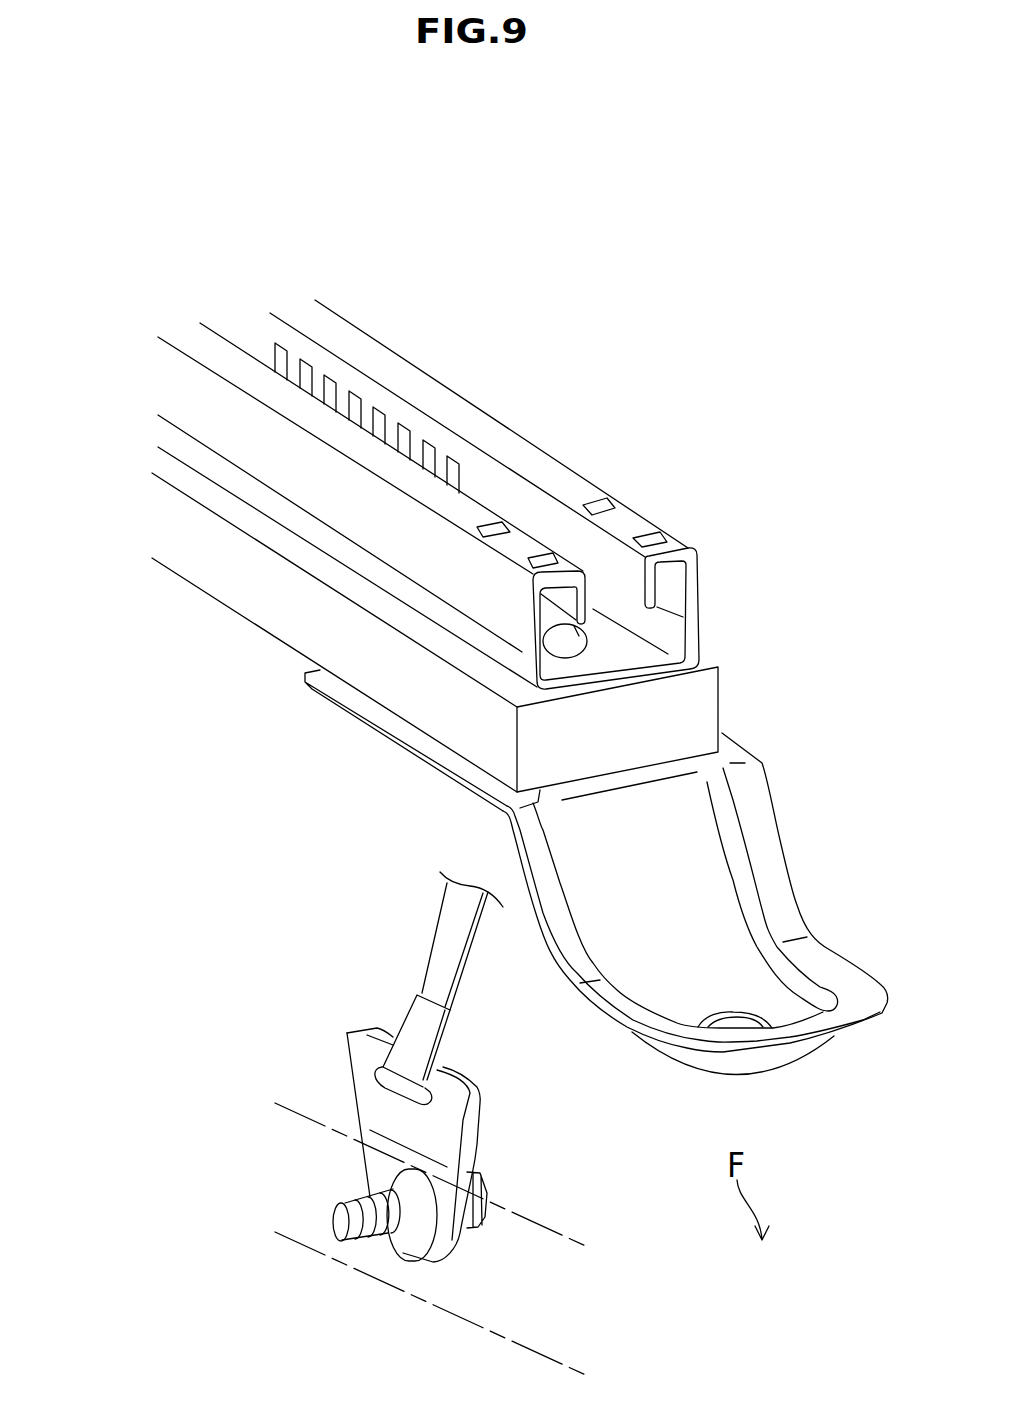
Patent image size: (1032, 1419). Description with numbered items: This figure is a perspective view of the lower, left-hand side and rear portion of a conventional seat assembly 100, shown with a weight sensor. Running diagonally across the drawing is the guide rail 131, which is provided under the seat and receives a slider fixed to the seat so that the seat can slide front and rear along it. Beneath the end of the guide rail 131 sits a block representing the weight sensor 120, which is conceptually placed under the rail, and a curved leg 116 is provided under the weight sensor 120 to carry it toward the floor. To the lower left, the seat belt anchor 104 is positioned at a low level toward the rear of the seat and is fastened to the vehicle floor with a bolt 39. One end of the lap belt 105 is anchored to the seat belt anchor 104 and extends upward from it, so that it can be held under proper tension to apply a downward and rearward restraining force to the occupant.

The seat assembly 100 is at (140, 308).
The guide rail 131 is at (507, 445).
The weight sensor 120 is at (705, 720).
The leg 116 is at (780, 883).
The lap belt 105 is at (437, 948).
The seat belt anchor 104 is at (473, 1128).
The bolt 39 is at (482, 1205).